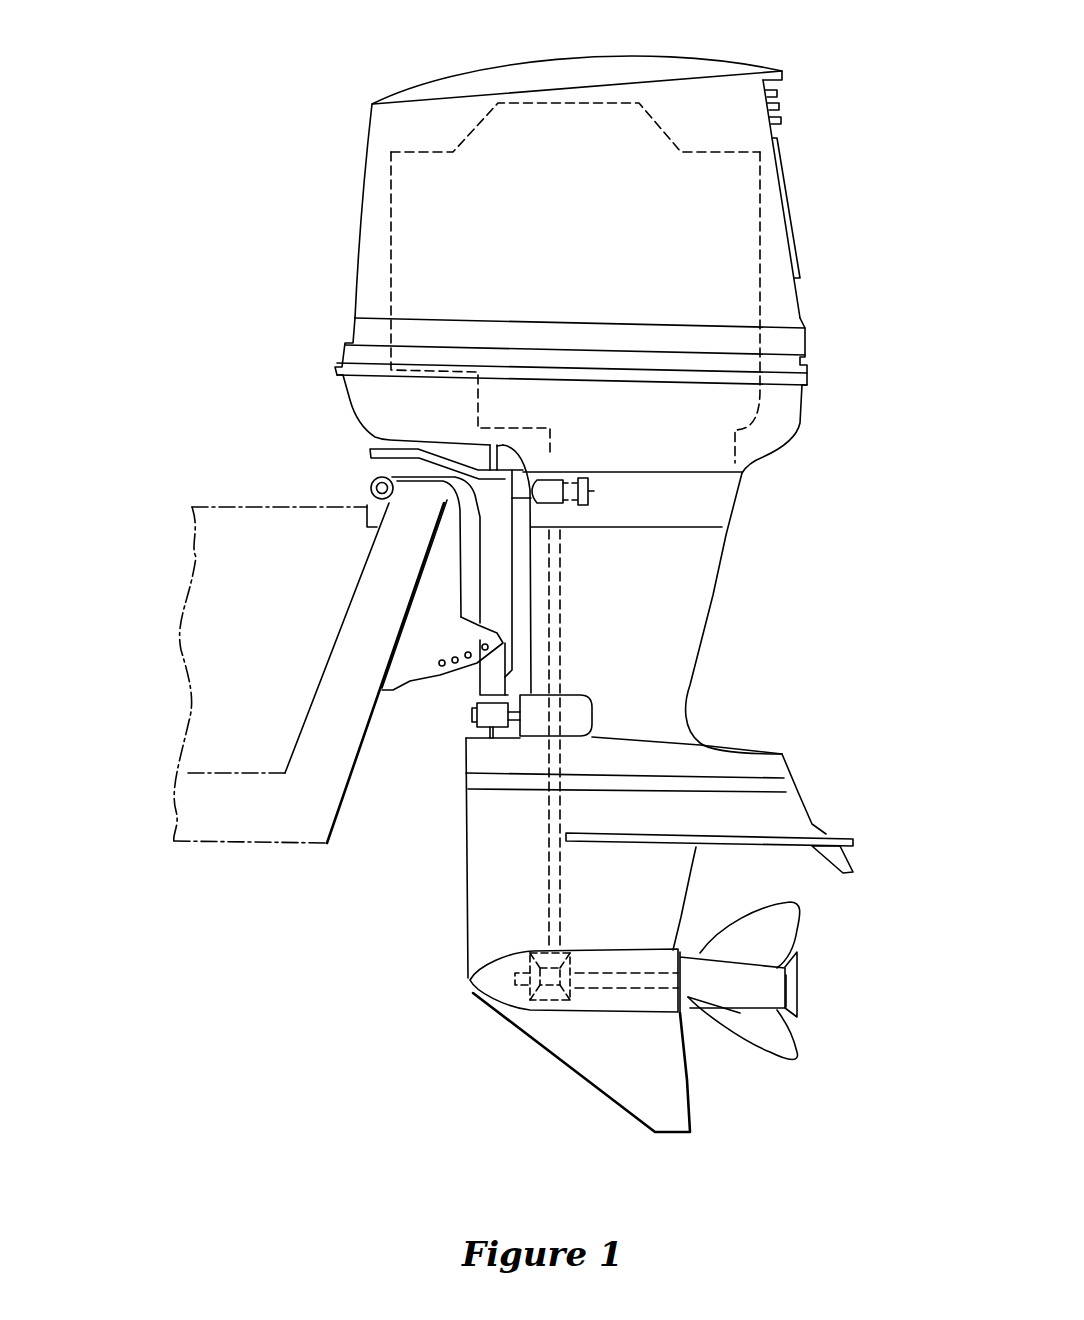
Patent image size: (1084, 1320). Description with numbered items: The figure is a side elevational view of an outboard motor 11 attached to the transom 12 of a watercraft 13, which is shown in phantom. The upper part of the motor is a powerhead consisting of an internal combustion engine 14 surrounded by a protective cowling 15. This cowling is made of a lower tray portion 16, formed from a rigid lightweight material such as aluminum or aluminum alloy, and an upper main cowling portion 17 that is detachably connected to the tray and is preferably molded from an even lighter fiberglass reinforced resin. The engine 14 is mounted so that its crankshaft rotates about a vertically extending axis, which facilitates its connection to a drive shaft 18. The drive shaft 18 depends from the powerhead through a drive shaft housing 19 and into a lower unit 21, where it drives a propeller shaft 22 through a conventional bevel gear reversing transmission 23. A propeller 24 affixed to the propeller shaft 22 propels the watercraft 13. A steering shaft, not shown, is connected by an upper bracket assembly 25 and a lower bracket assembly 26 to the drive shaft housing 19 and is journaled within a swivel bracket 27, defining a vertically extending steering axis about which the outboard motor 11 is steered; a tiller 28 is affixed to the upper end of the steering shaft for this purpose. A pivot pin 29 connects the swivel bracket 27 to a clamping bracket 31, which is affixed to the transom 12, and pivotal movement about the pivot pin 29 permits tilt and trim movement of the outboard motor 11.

The outboard motor 11 is at (793, 45).
The transom 12 is at (346, 753).
The watercraft 13 is at (193, 505).
The internal combustion engine 14 is at (760, 232).
The protective cowling 15 is at (358, 225).
The lower tray portion 16 is at (353, 405).
The upper main cowling portion 17 is at (365, 150).
The drive shaft 18 is at (562, 667).
The drive shaft housing 19 is at (713, 593).
The lower unit 21 is at (470, 913).
The propeller shaft 22 is at (622, 990).
The bevel gear reversing transmission 23 is at (588, 948).
The propeller 24 is at (757, 1040).
The upper bracket assembly 25 is at (594, 493).
The lower bracket assembly 26 is at (586, 715).
The swivel bracket 27 is at (502, 578).
The tiller 28 is at (368, 453).
The pivot pin 29 is at (371, 486).
The clamping bracket 31 is at (427, 622).